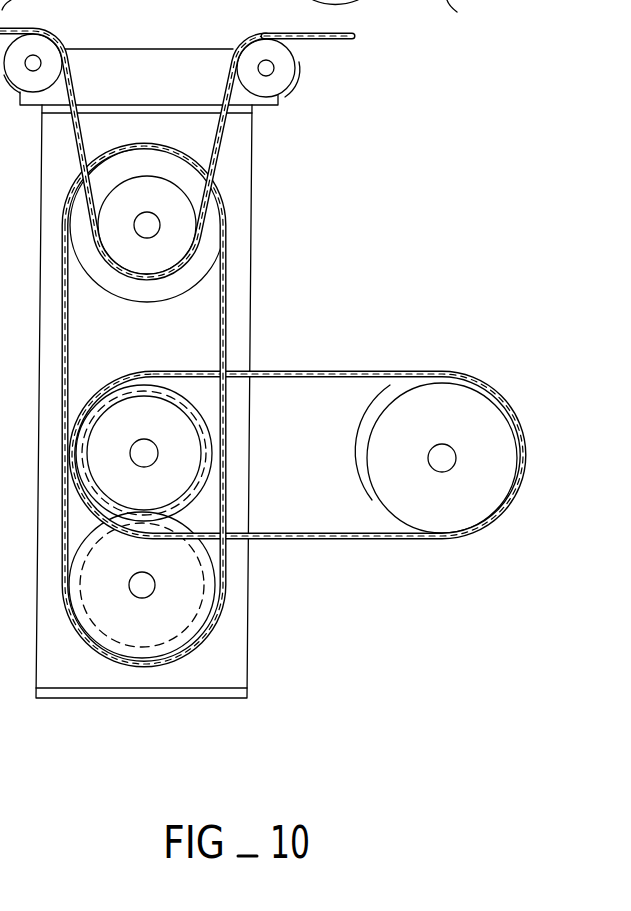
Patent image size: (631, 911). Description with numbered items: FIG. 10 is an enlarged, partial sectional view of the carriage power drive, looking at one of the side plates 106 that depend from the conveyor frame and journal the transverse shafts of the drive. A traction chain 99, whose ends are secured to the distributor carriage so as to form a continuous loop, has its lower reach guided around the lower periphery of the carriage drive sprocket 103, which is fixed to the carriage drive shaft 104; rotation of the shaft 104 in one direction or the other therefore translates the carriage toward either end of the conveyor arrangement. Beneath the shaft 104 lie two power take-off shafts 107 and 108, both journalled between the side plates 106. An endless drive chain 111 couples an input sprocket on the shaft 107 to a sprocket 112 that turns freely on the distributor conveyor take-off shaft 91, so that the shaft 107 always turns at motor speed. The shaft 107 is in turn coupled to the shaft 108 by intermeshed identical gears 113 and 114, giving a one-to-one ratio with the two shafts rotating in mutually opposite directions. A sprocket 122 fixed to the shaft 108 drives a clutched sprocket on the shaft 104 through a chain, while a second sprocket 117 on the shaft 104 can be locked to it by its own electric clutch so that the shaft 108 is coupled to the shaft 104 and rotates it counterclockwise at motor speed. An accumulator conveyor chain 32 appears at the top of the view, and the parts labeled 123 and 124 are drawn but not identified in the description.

The accumulator conveyor chain 32 is at (467, 12).
The distributor conveyor take-off shaft 91 is at (447, 455).
The traction chain 99 is at (353, 40).
The carriage drive sprocket 103 is at (180, 223).
The carriage drive shaft 104 is at (157, 236).
The side plate 106 is at (240, 168).
The power take-off shaft 107 is at (145, 441).
The power take-off shaft 108 is at (155, 589).
The endless drive chain 111 is at (338, 372).
The sprocket 112 is at (468, 398).
The gear 113 is at (190, 452).
The gear 114 is at (143, 653).
The sprocket 117 is at (212, 210).
The sprocket 122 is at (177, 390).
The vertical chain loop 123 is at (230, 308).
The lower sprocket 124 is at (165, 624).